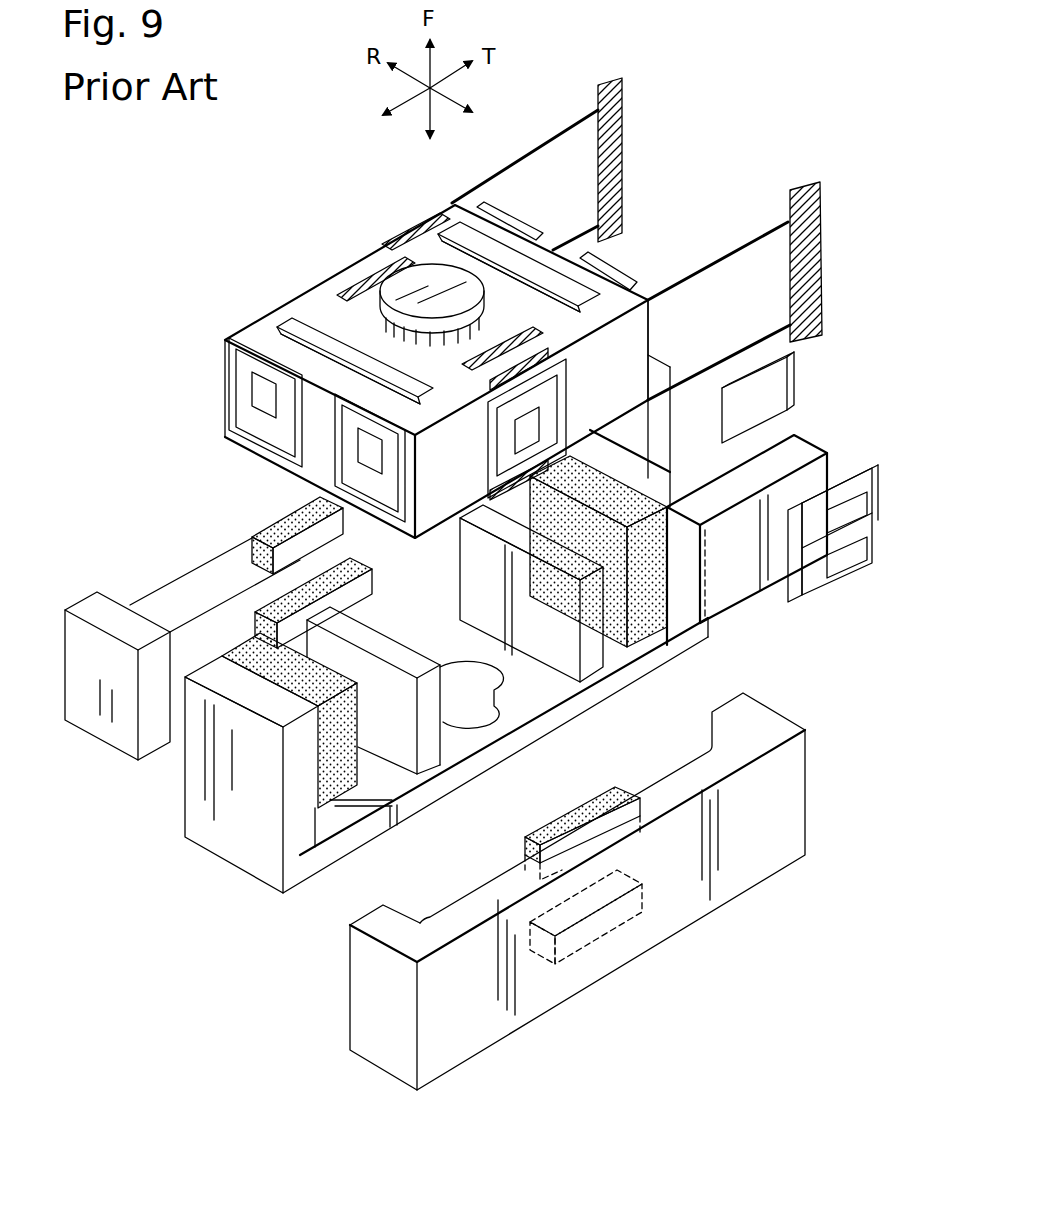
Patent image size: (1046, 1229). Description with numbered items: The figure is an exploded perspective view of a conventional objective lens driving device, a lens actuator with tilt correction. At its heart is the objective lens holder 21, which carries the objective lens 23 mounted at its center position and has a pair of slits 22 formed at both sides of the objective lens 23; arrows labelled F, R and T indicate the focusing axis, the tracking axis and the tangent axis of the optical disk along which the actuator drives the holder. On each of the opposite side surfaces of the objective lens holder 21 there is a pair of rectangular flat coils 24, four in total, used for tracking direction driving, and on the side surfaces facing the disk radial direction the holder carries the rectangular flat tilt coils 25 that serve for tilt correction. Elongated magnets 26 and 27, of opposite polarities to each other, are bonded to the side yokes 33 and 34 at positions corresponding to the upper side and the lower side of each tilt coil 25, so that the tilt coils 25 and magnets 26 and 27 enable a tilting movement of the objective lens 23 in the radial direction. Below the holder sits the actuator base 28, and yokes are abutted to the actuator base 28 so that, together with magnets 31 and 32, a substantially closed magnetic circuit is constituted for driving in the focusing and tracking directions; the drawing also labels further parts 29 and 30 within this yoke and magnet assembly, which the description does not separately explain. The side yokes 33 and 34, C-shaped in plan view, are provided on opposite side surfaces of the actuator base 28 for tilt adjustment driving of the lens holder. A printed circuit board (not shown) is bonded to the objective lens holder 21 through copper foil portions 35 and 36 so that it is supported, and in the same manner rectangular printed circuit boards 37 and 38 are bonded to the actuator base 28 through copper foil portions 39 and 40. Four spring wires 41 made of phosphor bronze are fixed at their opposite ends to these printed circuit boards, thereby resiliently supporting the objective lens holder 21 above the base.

The objective lens holder 21 is at (340, 282).
The slits 22 is at (311, 340).
The objective lens 23 is at (433, 283).
The rectangular flat coils 24 is at (238, 378).
The tilt coils 25 is at (557, 400).
The magnet 26 is at (287, 527).
The magnet 27 is at (380, 597).
The actuator base 28 is at (255, 858).
The yoke plate 29 is at (597, 657).
The magnet 30 is at (622, 458).
The magnet 31 is at (260, 637).
The magnet 32 is at (658, 660).
The side yoke 33 is at (762, 863).
The side yoke 34 is at (122, 733).
The copper foil portion 35 is at (487, 393).
The copper foil portion 36 is at (490, 482).
The rectangular printed circuit board 37 is at (813, 583).
The rectangular printed circuit board 38 is at (763, 387).
The copper foil portion 39 is at (862, 510).
The copper foil portion 40 is at (853, 550).
The spring wires 41 is at (532, 155).